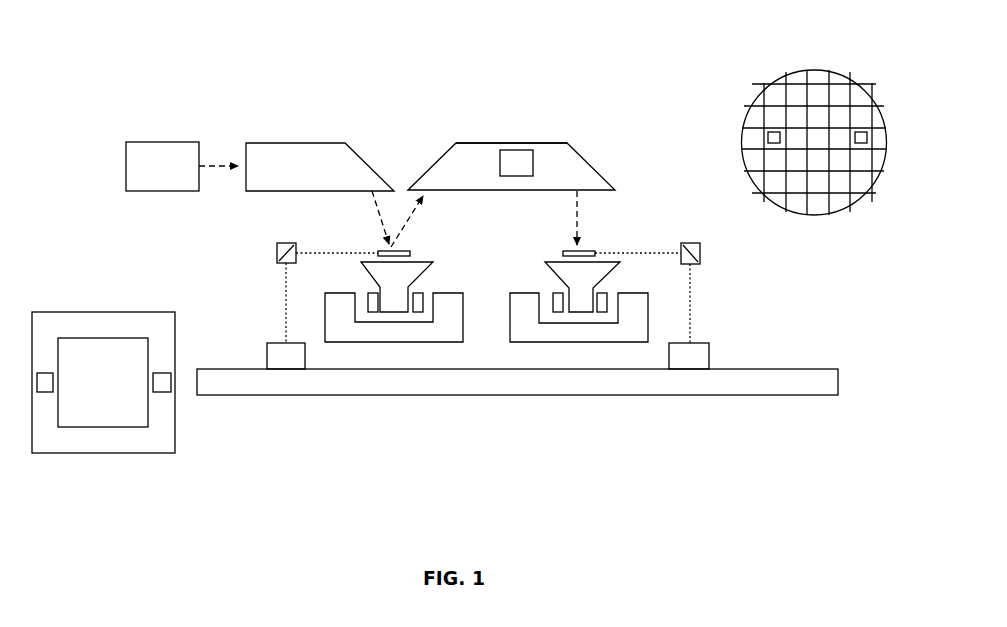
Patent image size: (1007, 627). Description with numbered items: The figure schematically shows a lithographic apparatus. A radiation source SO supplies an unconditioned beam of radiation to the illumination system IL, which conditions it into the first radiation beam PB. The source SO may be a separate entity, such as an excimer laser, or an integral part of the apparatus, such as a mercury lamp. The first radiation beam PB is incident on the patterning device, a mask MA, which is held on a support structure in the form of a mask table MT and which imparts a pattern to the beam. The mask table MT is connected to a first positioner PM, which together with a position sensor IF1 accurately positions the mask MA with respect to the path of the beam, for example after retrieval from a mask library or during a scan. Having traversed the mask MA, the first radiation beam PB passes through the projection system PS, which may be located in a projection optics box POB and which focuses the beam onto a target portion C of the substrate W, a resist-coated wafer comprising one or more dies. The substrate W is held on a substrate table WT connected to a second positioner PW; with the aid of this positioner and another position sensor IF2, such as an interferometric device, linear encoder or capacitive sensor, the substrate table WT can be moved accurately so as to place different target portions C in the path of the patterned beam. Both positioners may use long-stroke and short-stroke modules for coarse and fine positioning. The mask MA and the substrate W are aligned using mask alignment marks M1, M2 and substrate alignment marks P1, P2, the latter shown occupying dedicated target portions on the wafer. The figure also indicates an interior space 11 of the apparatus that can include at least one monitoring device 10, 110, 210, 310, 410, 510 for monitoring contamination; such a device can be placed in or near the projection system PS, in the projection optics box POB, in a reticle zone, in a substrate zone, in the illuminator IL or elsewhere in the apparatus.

The radiation source SO is at (162, 166).
The illumination system IL is at (320, 167).
The first radiation beam PB is at (380, 221).
The projection optics box POB is at (438, 105).
The projection system PS is at (570, 165).
The interior space 11 is at (463, 158).
The monitoring device 10 is at (514, 97).
The monitoring device 110 is at (514, 97).
The monitoring device 210 is at (514, 97).
The monitoring device 310 is at (514, 97).
The monitoring device 410 is at (514, 97).
The monitoring device 510 is at (512, 160).
The patterning device MA is at (381, 250).
The support structure MT is at (391, 312).
The first positioner PM is at (428, 342).
The position sensor IF1 is at (283, 243).
The substrate W is at (725, 150).
The substrate table WT is at (577, 312).
The second positioner PW is at (610, 342).
The position sensor IF2 is at (700, 254).
The mask alignment mark M1 is at (161, 392).
The mask alignment mark M2 is at (43, 392).
The substrate alignment mark P1 is at (774, 143).
The substrate alignment mark P2 is at (861, 143).
The target portion C is at (818, 127).